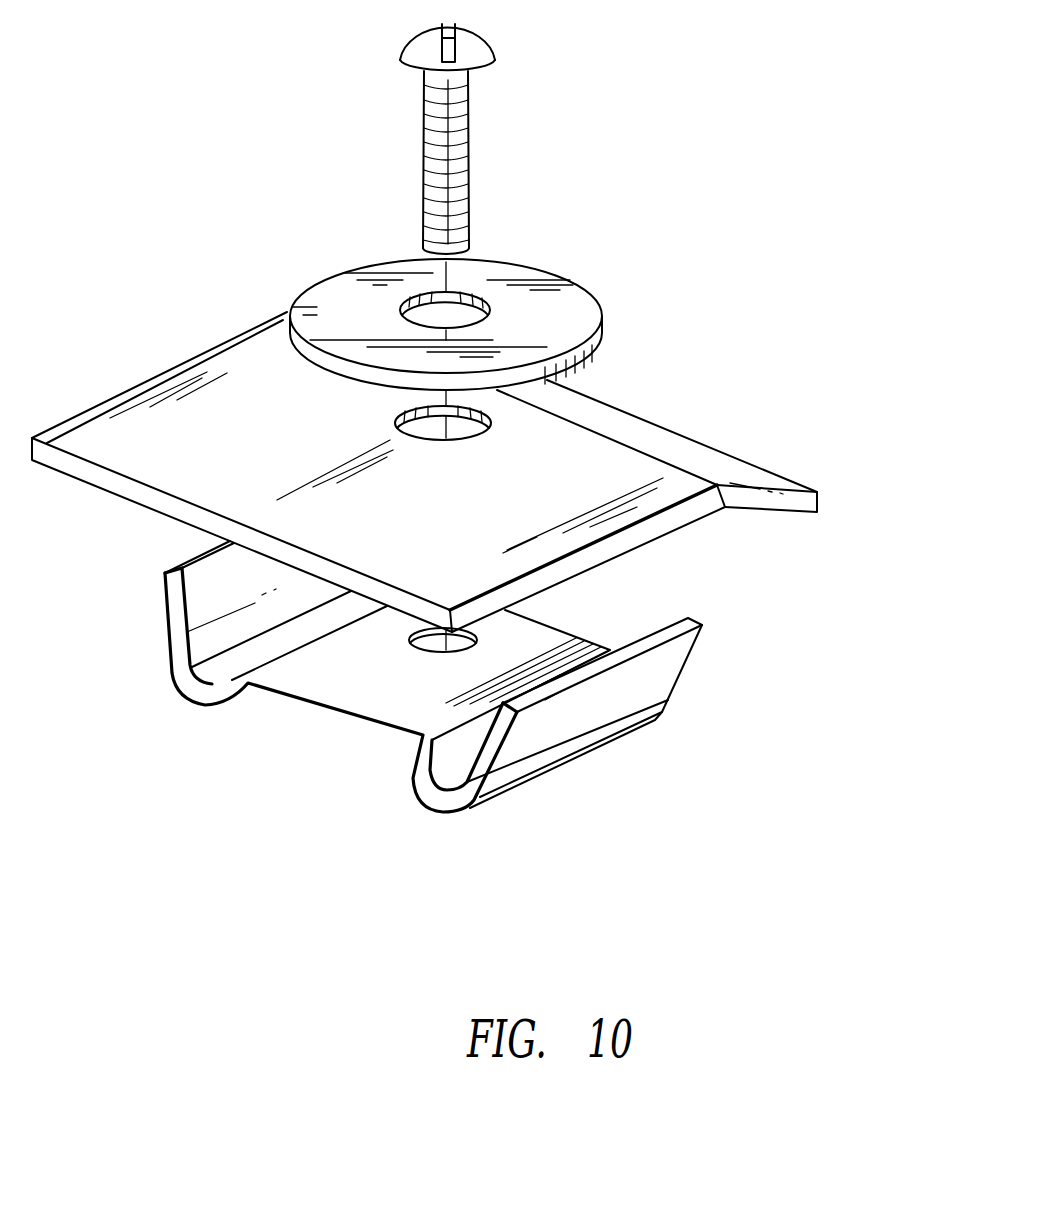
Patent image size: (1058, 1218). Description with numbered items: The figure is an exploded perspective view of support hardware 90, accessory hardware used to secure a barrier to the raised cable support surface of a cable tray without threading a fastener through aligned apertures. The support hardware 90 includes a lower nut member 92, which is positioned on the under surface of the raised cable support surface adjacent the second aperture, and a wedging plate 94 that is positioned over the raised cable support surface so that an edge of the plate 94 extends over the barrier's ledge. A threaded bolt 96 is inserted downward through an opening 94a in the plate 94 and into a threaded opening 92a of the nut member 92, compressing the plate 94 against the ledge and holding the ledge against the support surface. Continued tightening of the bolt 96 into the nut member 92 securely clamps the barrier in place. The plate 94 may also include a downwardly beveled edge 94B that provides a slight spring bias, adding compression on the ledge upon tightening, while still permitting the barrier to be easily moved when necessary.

The support hardware 90 is at (623, 58).
The lower nut member 92 is at (433, 676).
The threaded opening 92a is at (472, 628).
The wedging plate 94 is at (424, 472).
The opening 94a is at (467, 438).
The downwardly beveled edge 94B is at (708, 457).
The threaded bolt 96 is at (481, 50).